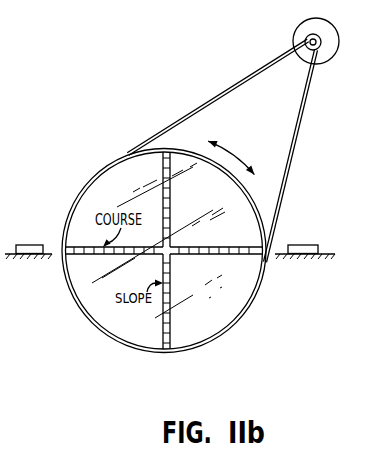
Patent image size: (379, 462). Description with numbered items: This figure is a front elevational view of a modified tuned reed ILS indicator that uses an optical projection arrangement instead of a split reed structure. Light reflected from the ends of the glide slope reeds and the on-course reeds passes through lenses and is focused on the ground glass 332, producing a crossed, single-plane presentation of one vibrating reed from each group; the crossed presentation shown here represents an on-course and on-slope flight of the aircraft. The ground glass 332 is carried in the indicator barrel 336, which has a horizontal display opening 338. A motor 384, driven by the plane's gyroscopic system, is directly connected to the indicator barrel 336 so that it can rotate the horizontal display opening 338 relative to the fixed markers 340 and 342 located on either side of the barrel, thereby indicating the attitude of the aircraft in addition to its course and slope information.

The ground glass 332 is at (115, 318).
The indicator barrel 336 is at (226, 330).
The horizontal display opening 338 is at (240, 254).
The fixed marker 340 is at (300, 245).
The fixed marker 342 is at (23, 245).
The motor 384 is at (297, 31).